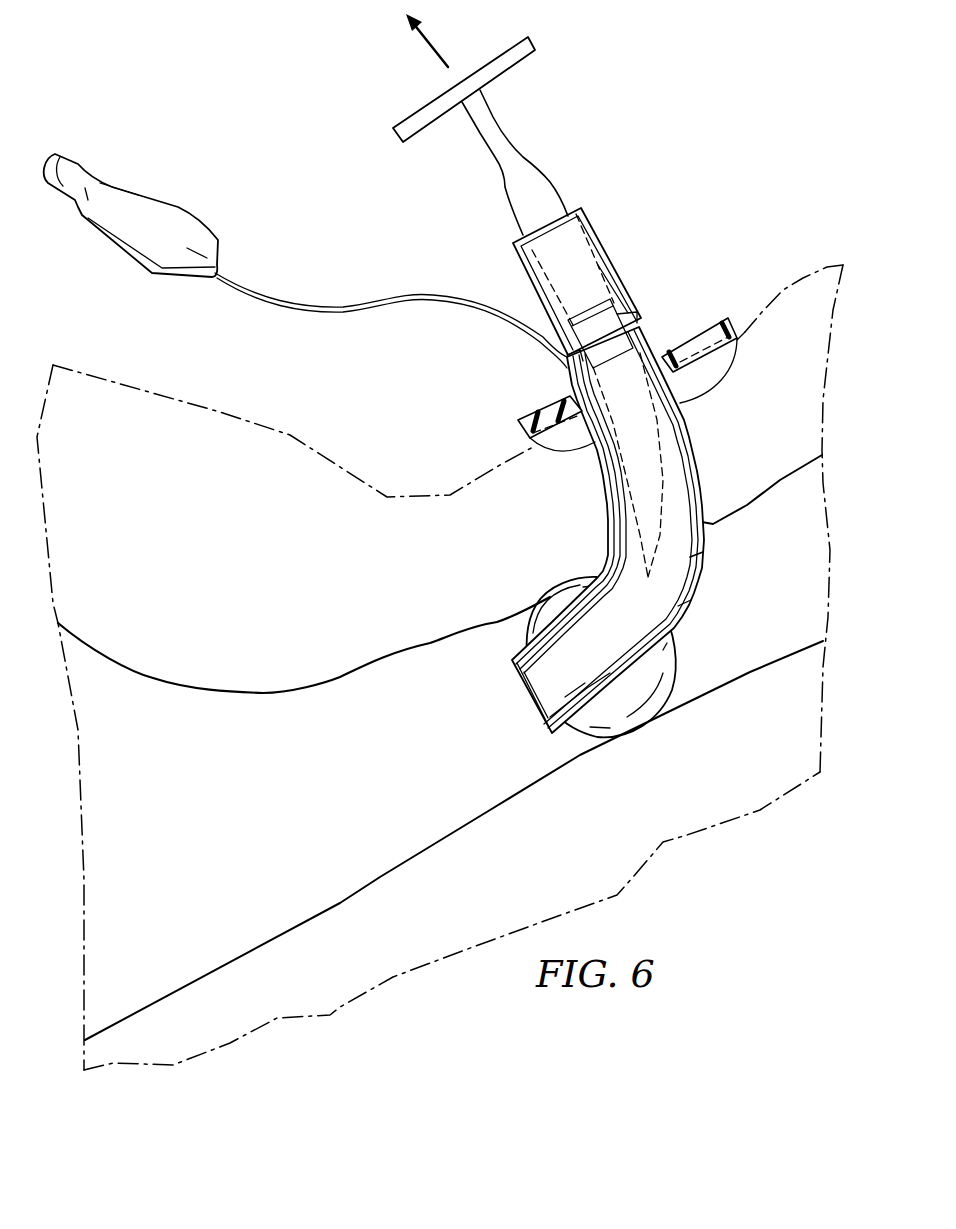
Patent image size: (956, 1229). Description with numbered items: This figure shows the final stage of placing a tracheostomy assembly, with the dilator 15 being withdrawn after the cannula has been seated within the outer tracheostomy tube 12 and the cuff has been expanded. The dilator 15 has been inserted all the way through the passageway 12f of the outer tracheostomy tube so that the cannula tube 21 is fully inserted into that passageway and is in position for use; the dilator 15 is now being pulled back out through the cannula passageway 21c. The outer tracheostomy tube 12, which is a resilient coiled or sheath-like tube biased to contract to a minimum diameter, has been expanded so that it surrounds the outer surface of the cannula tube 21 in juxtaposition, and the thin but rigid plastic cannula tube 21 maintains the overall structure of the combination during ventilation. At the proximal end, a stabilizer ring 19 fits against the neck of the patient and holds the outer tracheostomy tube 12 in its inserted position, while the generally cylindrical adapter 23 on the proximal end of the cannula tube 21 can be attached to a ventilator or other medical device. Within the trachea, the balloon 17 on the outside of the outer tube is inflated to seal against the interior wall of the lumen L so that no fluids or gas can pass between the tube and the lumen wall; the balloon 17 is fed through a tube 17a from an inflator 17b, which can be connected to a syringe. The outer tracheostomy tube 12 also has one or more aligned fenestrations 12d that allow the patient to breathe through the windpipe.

The outer tracheostomy tube 12 is at (598, 494).
The fenestrations 12d is at (680, 603).
The passageway 12f is at (545, 718).
The dilator 15 is at (560, 183).
The balloon 17 is at (630, 738).
The tube 17a is at (437, 300).
The inflator 17b is at (123, 252).
The stabilizer ring 19 is at (527, 418).
The cannula tube 21 is at (680, 474).
The cannula passageway 21c is at (548, 685).
The adapter 23 is at (614, 261).
The lumen L is at (806, 641).